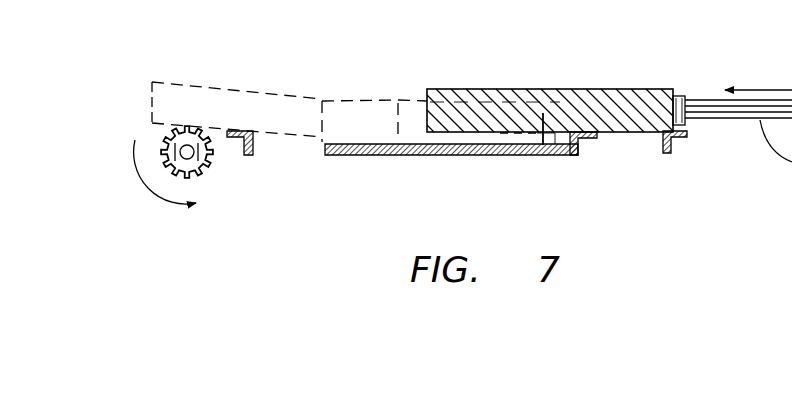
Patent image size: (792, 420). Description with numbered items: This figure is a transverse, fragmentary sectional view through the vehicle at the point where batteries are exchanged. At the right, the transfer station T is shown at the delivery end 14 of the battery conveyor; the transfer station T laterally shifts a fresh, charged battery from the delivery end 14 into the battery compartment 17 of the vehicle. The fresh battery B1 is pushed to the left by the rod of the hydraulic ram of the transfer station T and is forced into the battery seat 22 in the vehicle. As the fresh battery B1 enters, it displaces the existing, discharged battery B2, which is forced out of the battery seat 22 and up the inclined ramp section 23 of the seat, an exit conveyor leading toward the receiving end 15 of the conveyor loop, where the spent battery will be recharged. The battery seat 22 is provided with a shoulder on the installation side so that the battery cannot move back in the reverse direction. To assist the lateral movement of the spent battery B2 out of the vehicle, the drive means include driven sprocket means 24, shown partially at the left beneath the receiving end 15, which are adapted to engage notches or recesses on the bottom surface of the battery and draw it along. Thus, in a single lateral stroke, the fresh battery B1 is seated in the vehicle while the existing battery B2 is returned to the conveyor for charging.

The receiving end 15 is at (180, 73).
The existing battery B2 is at (257, 83).
The driven sprocket means 24 is at (148, 132).
The inclined ramp section 23 is at (368, 157).
The battery compartment 17 is at (440, 158).
The transfer station T is at (550, 65).
The battery seat 22 is at (547, 158).
The battery B1 is at (538, 152).
The delivery end 14 is at (780, 70).